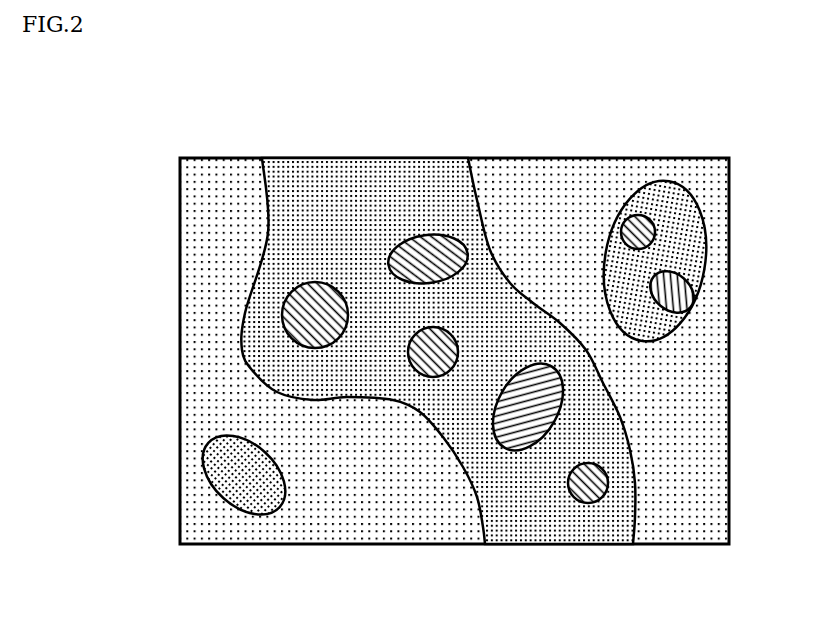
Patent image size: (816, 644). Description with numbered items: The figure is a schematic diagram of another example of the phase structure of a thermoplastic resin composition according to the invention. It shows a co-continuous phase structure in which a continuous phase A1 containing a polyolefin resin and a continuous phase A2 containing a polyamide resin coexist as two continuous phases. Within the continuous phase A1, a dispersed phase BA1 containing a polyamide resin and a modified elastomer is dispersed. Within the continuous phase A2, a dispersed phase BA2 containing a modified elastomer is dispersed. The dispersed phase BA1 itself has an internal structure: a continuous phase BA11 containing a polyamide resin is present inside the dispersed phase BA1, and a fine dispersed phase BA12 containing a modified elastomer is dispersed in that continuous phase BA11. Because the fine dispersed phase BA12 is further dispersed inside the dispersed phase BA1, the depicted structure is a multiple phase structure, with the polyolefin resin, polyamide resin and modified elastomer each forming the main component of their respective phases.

The continuous phase A1 is at (223, 167).
The continuous phase A2 is at (318, 167).
The dispersed phase BA1 is at (765, 122).
The dispersed phase BA2 is at (597, 556).
The continuous phase BA11 is at (645, 196).
The fine dispersed phase BA12 is at (673, 280).